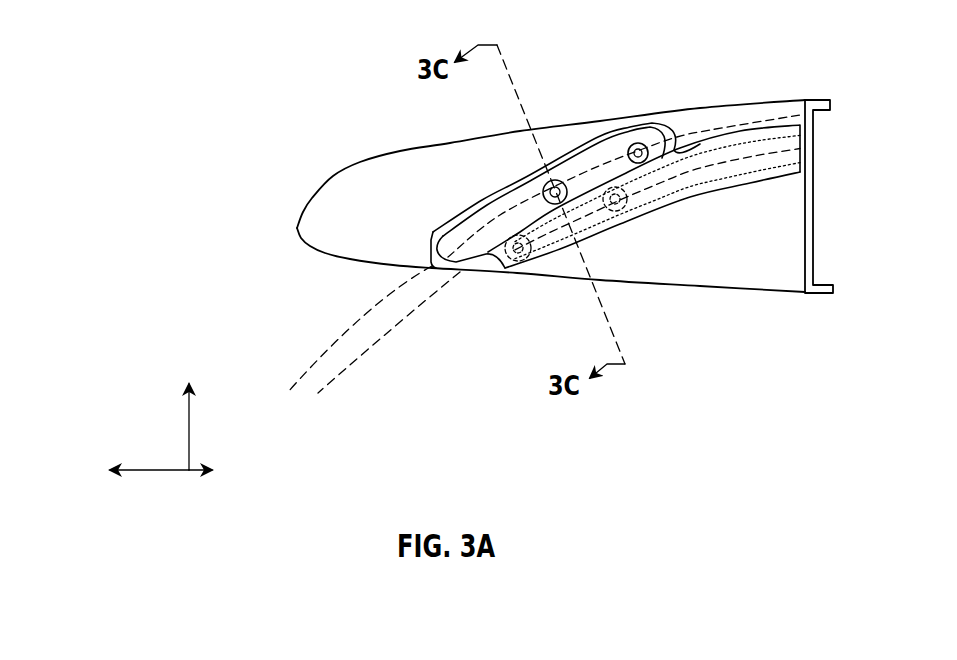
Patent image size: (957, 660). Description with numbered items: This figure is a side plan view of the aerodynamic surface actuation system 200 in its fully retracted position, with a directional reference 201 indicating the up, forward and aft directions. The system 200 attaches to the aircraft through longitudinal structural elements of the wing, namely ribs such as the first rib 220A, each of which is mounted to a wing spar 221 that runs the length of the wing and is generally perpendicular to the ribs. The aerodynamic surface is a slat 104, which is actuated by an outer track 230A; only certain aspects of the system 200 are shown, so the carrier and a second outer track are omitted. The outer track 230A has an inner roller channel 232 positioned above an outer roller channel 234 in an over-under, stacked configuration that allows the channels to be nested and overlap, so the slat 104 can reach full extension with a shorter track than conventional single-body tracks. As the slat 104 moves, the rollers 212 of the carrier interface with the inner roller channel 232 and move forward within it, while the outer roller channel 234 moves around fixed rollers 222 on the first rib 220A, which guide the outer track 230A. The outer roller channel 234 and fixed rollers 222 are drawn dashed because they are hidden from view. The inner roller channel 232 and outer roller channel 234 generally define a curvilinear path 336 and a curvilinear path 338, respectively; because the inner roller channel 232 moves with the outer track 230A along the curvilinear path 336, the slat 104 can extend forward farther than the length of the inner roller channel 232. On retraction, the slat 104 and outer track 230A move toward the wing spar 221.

The aerodynamic surface actuation system 200 is at (236, 46).
The coordinate reference frame 201 is at (146, 420).
The slat 104 is at (427, 147).
The rollers 212 is at (545, 186).
The fixed rollers 222 is at (518, 262).
The inner roller channel 232 is at (493, 205).
The outer roller channel 234 is at (688, 190).
The outer track 230A is at (744, 192).
The first rib 220A is at (752, 292).
The wing spar 221 is at (810, 100).
The curvilinear path 336 is at (338, 342).
The curvilinear path 338 is at (370, 348).